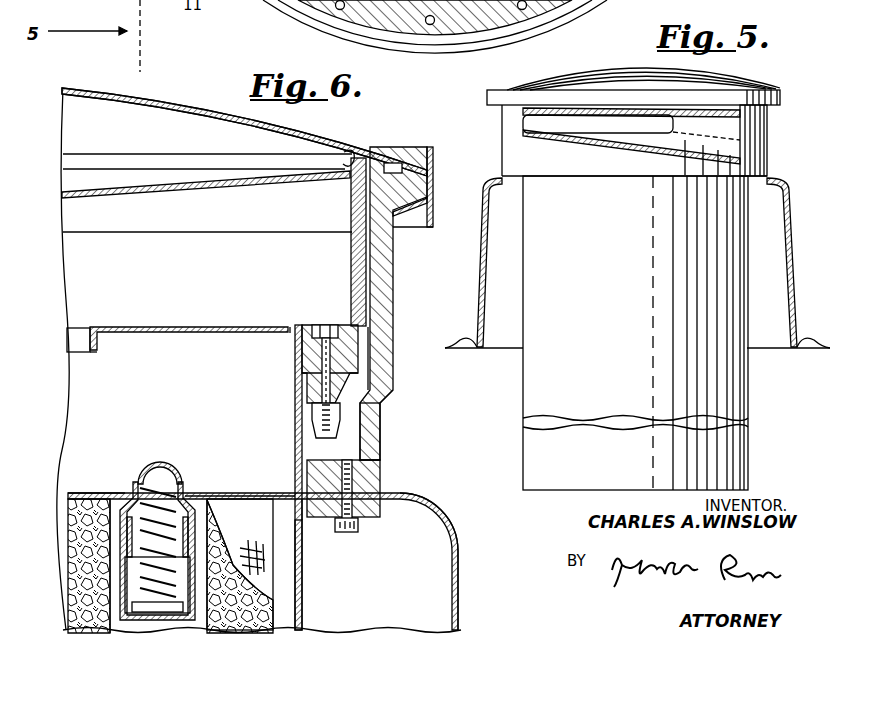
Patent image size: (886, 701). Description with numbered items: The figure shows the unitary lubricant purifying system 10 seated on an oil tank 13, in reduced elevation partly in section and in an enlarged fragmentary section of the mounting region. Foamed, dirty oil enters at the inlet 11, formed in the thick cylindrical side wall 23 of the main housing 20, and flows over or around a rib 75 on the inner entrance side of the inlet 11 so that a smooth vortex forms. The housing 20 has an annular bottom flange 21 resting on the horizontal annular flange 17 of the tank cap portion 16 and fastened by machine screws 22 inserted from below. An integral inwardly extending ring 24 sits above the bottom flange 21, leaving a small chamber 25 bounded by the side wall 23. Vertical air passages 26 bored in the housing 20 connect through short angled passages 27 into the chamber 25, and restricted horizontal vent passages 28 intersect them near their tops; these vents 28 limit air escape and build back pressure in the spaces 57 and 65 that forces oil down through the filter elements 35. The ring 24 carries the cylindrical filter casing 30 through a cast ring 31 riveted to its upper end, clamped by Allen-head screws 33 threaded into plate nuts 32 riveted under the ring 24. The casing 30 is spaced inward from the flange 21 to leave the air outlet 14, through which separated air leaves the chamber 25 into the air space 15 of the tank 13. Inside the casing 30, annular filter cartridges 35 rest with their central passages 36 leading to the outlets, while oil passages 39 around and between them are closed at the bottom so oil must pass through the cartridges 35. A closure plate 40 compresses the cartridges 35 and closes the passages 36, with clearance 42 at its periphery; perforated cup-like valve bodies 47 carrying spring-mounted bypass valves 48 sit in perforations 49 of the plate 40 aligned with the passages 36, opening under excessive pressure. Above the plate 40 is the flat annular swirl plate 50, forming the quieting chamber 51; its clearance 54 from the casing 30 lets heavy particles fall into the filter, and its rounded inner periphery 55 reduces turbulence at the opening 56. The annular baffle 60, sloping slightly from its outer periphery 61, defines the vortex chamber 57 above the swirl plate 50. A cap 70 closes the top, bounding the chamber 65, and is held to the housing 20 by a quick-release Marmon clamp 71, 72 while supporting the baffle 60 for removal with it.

In FIG. 5, the lubricant purifying system 10 is at (502, 134).
In FIG. 5, the inlet 11 is at (731, 134).
In FIG. 5, the oil tank 13 is at (822, 343).
In FIG. 6, the air outlet 14 is at (303, 519).
In FIG. 6, the air space 15 is at (456, 602).
In FIG. 6, the cap portion 16 is at (449, 514).
In FIG. 6, the annular flange 17 is at (390, 501).
In FIG. 6, the housing 20 is at (380, 464).
In FIG. 5, the housing 20 is at (767, 118).
In FIG. 6, the bottom flange 21 is at (355, 480).
In FIG. 6, the machine screws 22 is at (350, 533).
In FIG. 6, the side wall 23 is at (394, 285).
In FIG. 6, the ring 24 is at (322, 392).
In FIG. 6, the chamber 25 is at (361, 441).
In FIG. 6, the vertical air passages 26 is at (395, 350).
In FIG. 6, the angularly extending air passages 27 is at (381, 401).
In FIG. 6, the air vent passages 28 is at (350, 156).
In FIG. 6, the filter casing 30 is at (295, 422).
In FIG. 5, the filter casing 30 is at (748, 452).
In FIG. 6, the cast ring 31 is at (307, 357).
In FIG. 6, the plate nuts 32 is at (314, 438).
In FIG. 6, the Allen-head screws 33 is at (318, 326).
In FIG. 6, the filter cartridges 35 is at (302, 618).
In FIG. 6, the central passages 36 is at (157, 561).
In FIG. 6, the oil passages 39 is at (302, 583).
In FIG. 6, the closure plate 40 is at (85, 493).
In FIG. 6, the clearance 42 is at (260, 514).
In FIG. 6, the valve bodies 47 is at (200, 565).
In FIG. 6, the bypass valves 48 is at (180, 478).
In FIG. 6, the perforations 49 is at (126, 495).
In FIG. 6, the swirl plate 50 is at (197, 327).
In FIG. 6, the quieting chamber 51 is at (194, 403).
In FIG. 6, the clearance 54 is at (291, 326).
In FIG. 6, the inner periphery 55 is at (97, 346).
In FIG. 6, the opening 56 is at (78, 332).
In FIG. 6, the vortex chamber 57 is at (241, 273).
In FIG. 6, the baffle 60 is at (190, 187).
In FIG. 6, the outer periphery 61 is at (351, 190).
In FIG. 6, the chamber 65 is at (134, 138).
In FIG. 6, the cap 70 is at (168, 100).
In FIG. 6, the Marmon clamp 71 is at (433, 203).
In FIG. 6, the Marmon clamp 72 is at (434, 180).
In FIG. 5, the rib 75 is at (571, 126).